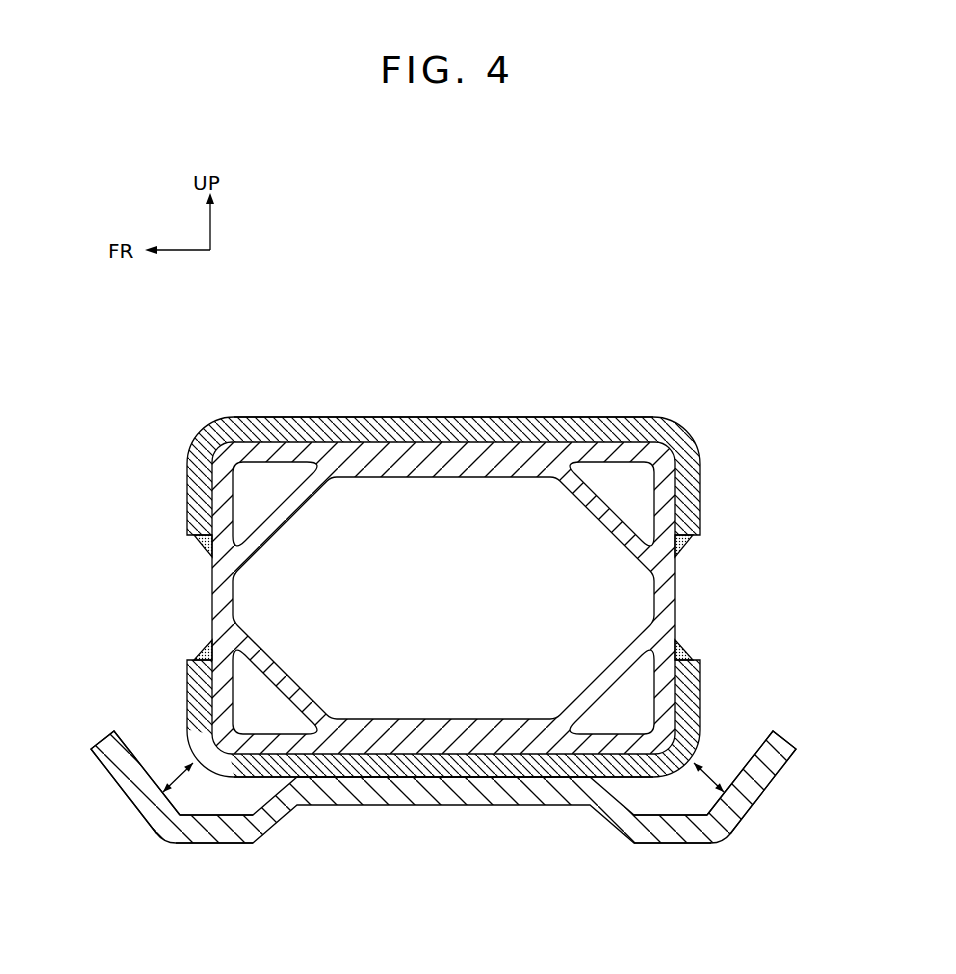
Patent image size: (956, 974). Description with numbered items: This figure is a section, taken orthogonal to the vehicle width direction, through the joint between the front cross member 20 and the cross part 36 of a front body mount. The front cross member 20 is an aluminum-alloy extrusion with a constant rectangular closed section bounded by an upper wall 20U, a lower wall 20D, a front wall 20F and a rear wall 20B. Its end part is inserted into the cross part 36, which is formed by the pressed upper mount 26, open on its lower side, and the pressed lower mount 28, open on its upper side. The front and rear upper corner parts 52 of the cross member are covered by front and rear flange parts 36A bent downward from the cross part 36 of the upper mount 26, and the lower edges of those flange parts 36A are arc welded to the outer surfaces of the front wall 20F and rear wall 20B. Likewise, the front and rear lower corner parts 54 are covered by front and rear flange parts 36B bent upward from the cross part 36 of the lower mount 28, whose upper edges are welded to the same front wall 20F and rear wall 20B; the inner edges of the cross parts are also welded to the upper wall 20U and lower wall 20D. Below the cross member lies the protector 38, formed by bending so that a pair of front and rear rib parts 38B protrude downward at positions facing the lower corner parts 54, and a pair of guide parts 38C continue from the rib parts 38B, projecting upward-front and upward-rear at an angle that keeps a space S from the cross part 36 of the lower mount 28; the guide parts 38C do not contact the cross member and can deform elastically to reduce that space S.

The front cross member 20 is at (580, 438).
The upper wall 20U is at (433, 463).
The lower wall 20D is at (498, 727).
The front wall 20F is at (212, 592).
The rear wall 20B is at (677, 597).
The upper mount 26 is at (282, 417).
The lower mount 28 is at (343, 760).
The cross part 36 is at (367, 417).
The front and rear flange parts 36A is at (193, 487).
The front and rear flange parts 36B is at (185, 683).
The protector 38 is at (463, 806).
The rib parts 38B is at (200, 845).
The guide parts 38C is at (118, 796).
The upper corner parts 52 is at (233, 467).
The lower corner parts 54 is at (230, 723).
The space S is at (176, 779).